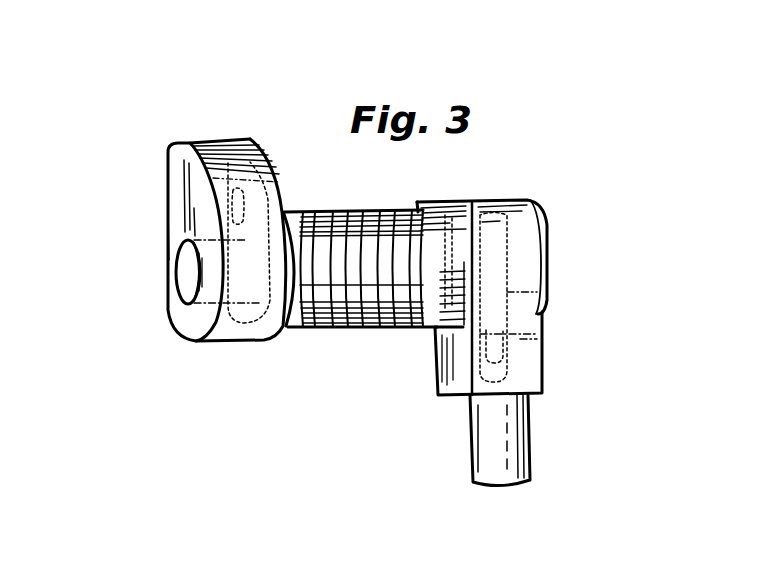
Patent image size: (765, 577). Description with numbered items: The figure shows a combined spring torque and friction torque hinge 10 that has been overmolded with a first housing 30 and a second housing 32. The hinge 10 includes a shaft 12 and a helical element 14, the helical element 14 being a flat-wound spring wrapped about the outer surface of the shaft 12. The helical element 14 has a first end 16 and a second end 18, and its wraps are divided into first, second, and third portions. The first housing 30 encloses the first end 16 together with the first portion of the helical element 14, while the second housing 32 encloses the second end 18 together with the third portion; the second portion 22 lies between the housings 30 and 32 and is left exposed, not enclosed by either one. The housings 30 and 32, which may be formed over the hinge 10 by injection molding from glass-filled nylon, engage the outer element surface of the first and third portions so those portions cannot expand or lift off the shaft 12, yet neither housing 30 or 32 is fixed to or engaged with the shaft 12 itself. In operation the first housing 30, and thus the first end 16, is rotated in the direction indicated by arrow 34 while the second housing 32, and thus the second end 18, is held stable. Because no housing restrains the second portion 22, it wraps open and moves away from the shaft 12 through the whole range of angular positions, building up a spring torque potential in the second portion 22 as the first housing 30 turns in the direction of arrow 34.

The combined spring torque and friction torque hinge 10 is at (572, 225).
The shaft 12 is at (174, 283).
The helical element 14 is at (327, 198).
The first end 16 is at (208, 177).
The second end 18 is at (520, 362).
The second portion 22 is at (358, 329).
The first housing 30 is at (196, 133).
The second housing 32 is at (539, 403).
The arrow 34 is at (131, 250).